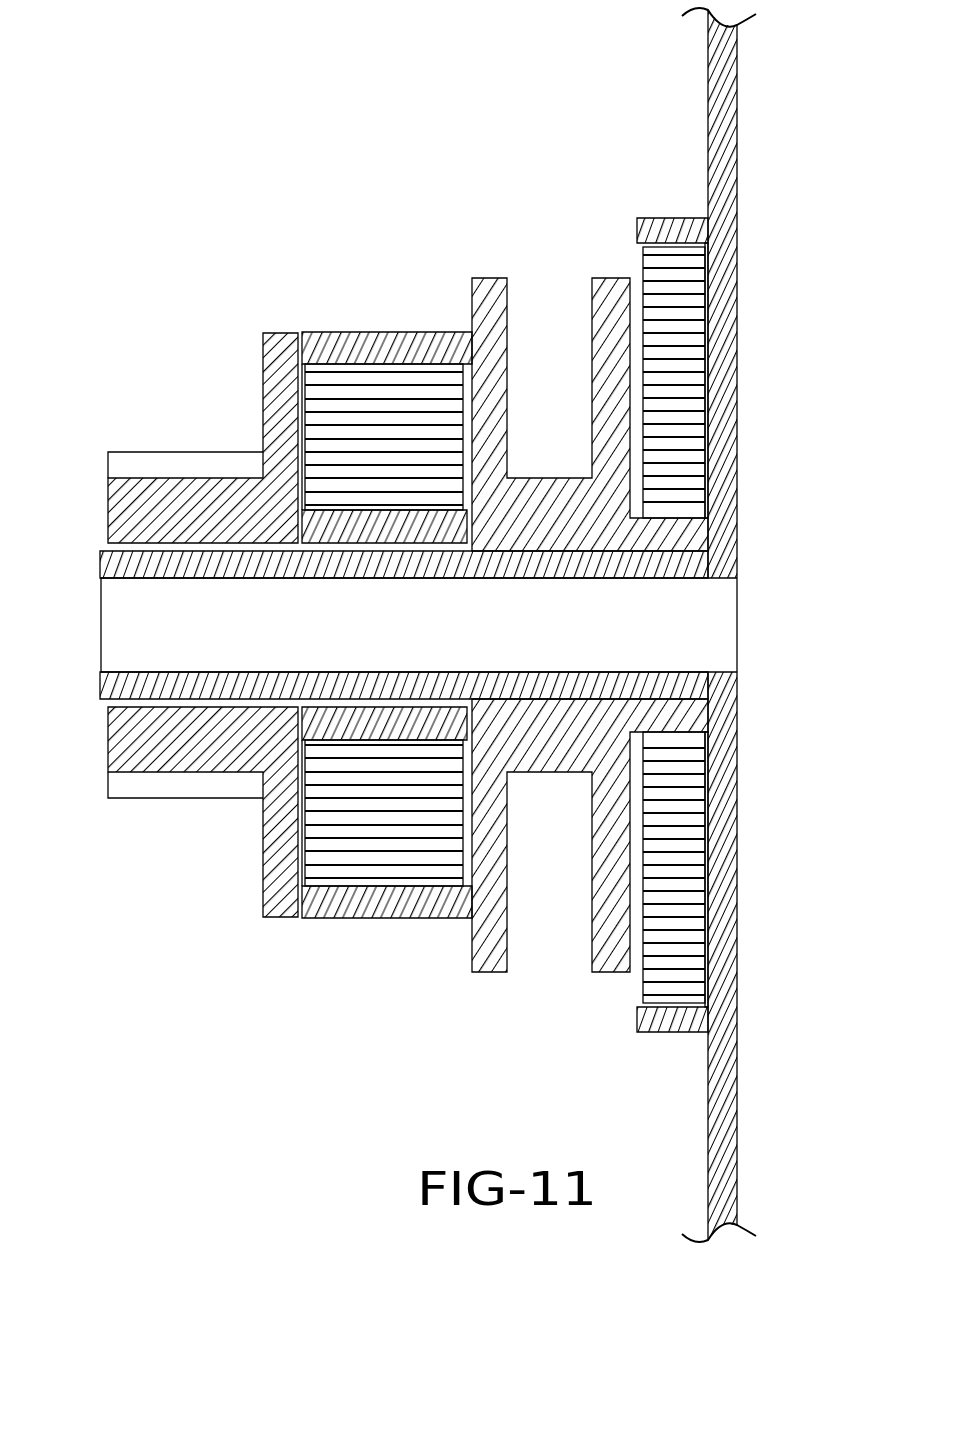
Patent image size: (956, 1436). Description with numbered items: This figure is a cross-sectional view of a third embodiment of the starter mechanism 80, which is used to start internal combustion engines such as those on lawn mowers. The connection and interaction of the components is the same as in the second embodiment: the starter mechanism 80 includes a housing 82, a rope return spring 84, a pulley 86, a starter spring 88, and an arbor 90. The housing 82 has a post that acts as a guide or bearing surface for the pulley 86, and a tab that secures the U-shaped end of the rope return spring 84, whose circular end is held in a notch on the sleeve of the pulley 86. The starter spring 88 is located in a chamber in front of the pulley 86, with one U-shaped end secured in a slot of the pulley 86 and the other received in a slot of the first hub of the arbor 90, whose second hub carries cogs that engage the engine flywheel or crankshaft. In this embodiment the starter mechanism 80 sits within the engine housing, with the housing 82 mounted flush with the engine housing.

The starter mechanism 80 is at (164, 160).
The housing 82 is at (737, 178).
The rope return spring 84 is at (643, 268).
The pulley 86 is at (493, 277).
The starter spring 88 is at (355, 372).
The arbor 90 is at (263, 395).